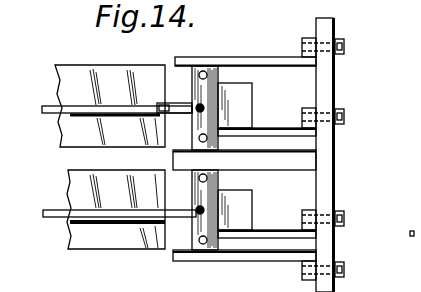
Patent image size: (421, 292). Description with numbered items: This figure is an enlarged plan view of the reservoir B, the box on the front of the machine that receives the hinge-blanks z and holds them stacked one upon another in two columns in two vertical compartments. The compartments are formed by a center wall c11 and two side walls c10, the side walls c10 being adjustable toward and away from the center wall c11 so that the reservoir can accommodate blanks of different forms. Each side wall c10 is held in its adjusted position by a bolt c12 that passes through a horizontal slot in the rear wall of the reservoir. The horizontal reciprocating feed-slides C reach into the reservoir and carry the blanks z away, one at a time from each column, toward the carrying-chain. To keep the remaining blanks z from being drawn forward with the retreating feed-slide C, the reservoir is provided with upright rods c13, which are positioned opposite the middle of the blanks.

The reservoir B is at (345, 157).
The feed-slide C is at (110, 157).
The hinge-blank Z is at (235, 156).
The side wall c10 is at (268, 58).
The center wall c11 is at (244, 160).
The bolt c12 is at (336, 158).
The upright rod c13 is at (186, 104).